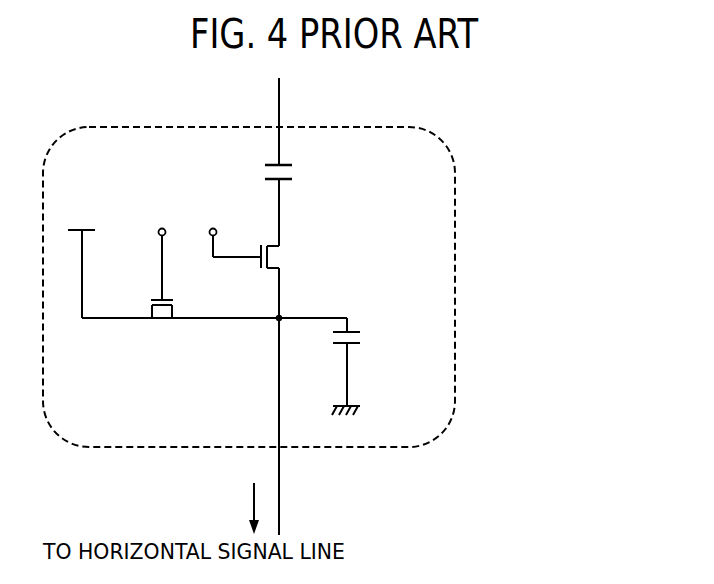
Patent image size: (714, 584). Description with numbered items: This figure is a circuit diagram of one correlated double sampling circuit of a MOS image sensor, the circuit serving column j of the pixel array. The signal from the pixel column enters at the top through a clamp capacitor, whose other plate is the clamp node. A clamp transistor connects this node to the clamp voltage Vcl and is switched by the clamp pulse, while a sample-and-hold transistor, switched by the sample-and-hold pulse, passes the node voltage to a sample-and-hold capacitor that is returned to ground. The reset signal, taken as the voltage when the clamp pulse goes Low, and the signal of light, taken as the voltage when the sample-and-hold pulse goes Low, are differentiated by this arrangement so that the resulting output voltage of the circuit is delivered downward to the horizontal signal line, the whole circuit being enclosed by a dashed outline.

The clamp voltage Vcl is at (76, 261).